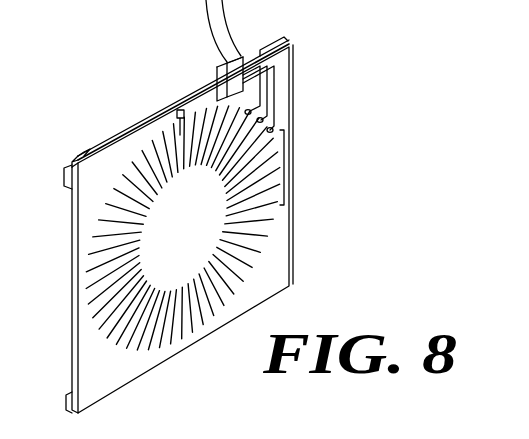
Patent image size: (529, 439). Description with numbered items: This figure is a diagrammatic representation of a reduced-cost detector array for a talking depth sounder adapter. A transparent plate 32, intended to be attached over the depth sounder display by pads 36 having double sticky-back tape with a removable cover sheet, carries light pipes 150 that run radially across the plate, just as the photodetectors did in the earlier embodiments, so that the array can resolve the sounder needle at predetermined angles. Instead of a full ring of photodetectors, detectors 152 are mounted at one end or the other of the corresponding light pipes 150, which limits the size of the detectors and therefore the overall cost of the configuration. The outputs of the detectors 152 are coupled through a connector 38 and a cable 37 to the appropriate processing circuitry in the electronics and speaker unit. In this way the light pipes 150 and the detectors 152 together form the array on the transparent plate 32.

The transparent plate 32 is at (77, 252).
The pads 36 is at (76, 150).
The cable 37 is at (229, 3).
The connector 38 is at (216, 74).
The light pipes 150 is at (286, 148).
The detectors 152 is at (251, 111).